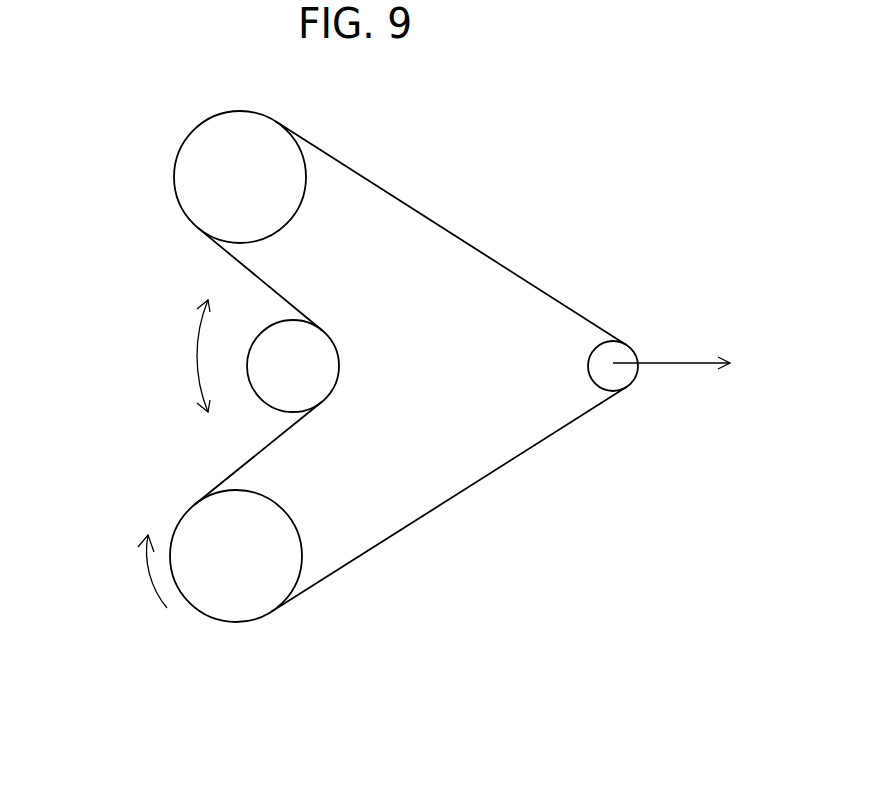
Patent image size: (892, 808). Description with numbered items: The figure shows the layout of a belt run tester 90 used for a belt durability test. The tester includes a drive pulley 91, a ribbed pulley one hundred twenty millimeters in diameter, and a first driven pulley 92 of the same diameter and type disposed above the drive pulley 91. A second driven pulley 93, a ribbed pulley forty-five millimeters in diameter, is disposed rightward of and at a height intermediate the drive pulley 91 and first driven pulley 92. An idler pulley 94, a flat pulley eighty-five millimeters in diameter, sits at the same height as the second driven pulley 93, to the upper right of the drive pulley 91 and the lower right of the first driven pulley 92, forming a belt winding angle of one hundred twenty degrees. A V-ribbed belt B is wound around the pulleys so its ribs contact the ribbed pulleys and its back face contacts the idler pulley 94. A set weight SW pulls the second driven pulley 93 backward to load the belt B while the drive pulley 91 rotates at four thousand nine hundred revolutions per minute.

The belt run tester 90 is at (530, 91).
The drive pulley 91 is at (278, 522).
The first driven pulley 92 is at (282, 210).
The second driven pulley 93 is at (597, 363).
The idler pulley 94 is at (322, 343).
The V-ribbed belt B is at (467, 242).
The set weight SW is at (688, 366).